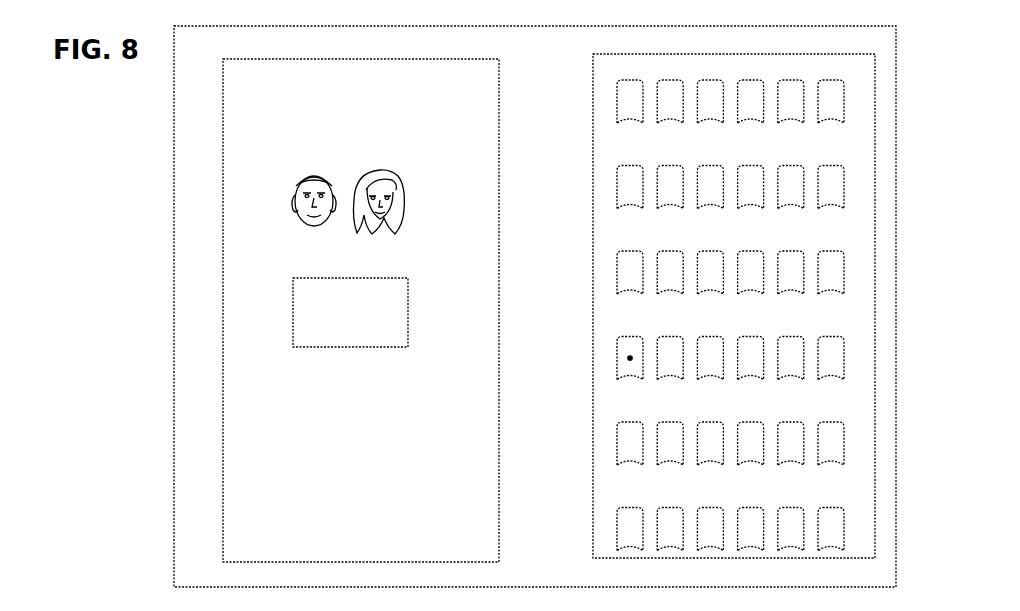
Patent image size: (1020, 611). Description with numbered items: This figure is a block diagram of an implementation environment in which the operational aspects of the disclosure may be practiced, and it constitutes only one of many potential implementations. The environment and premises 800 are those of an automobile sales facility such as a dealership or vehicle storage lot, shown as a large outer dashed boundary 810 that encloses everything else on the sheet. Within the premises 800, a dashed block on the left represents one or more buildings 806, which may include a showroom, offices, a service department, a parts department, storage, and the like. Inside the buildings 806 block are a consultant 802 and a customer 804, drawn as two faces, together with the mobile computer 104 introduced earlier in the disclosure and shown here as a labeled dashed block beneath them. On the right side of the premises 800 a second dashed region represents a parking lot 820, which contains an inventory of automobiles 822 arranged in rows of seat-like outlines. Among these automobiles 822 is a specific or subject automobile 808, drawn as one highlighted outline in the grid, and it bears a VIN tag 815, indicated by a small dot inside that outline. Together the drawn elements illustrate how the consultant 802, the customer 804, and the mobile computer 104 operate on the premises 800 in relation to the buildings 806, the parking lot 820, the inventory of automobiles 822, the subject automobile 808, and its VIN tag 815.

The premises 800 is at (127, 96).
The system boundary 810 is at (174, 375).
The buildings 806 is at (361, 310).
The consultant 802 is at (291, 200).
The customer 804 is at (407, 200).
The mobile computer 104 is at (350, 312).
The parking lot 820 is at (594, 225).
The automobiles 822 is at (603, 73).
The subject automobile 808 is at (621, 378).
The VIN tag 815 is at (628, 357).